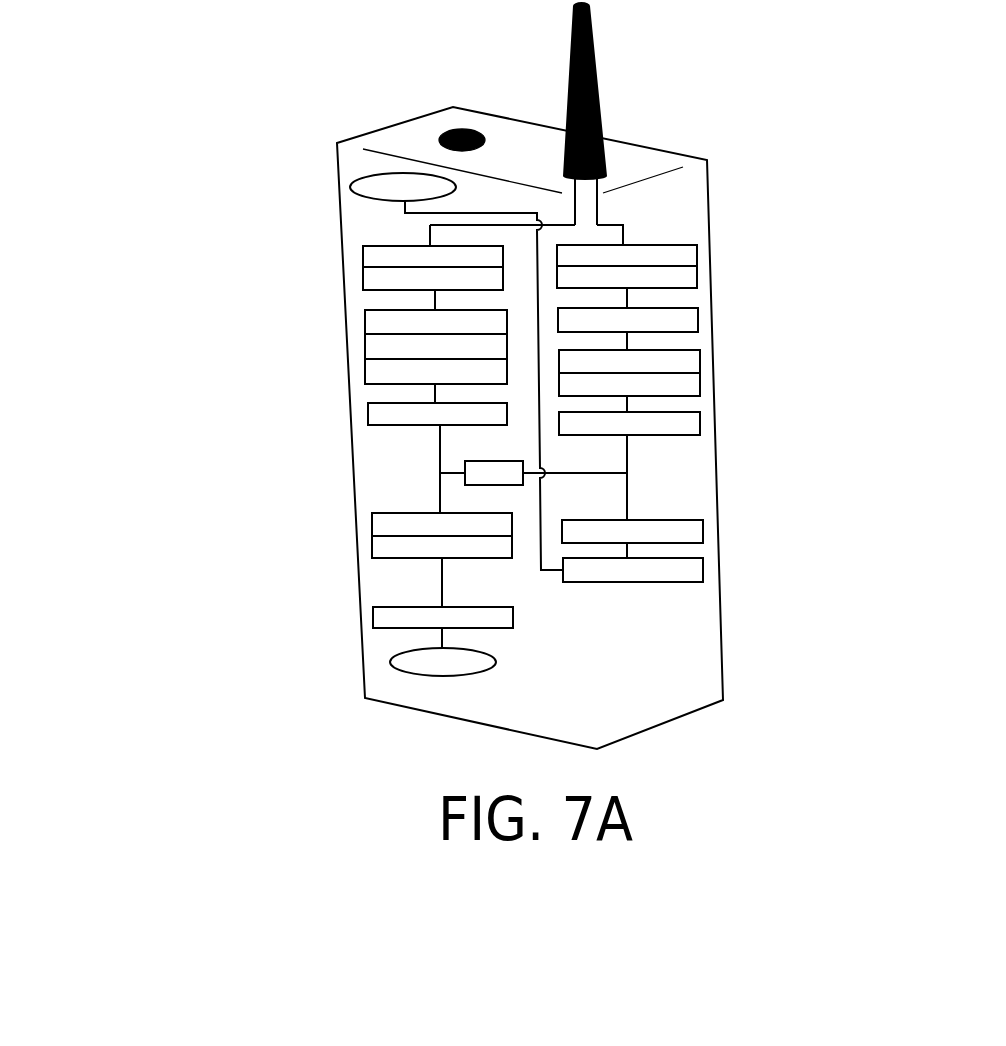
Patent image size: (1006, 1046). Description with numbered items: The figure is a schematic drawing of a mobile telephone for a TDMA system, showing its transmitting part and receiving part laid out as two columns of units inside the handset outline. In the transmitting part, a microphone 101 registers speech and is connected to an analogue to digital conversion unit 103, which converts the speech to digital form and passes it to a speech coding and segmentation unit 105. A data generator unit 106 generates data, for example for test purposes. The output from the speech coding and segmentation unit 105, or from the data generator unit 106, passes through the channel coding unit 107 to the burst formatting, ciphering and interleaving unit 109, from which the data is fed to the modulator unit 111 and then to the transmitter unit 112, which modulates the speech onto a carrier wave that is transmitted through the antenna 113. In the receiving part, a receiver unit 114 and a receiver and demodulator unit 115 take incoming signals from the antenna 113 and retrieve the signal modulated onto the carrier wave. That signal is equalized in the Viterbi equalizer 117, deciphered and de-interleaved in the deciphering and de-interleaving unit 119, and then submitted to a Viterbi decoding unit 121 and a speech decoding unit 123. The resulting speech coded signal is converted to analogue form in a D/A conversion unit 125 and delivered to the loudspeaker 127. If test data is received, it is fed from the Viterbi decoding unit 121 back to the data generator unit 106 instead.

The microphone 101 is at (478, 671).
The analogue to digital (A/D) conversion unit 103 is at (513, 615).
The speech coding and segmentation unit 105 is at (372, 537).
The data generator unit 106 is at (463, 477).
The channel coding unit 107 is at (368, 413).
The burst formatting, ciphering and interleaving unit 109 is at (366, 347).
The modulator unit 111 is at (365, 279).
The transmitter unit 112 is at (365, 255).
The antenna 113 is at (596, 67).
The receiver unit 114 is at (697, 255).
The receiver and demodulator unit 115 is at (697, 278).
The Viterbi equalizer 117 is at (698, 322).
The deciphering and de-interleaving unit 119 is at (700, 373).
The Viterbi decoding unit 121 is at (700, 423).
The speech decoding unit 123 is at (703, 527).
The D/A conversion unit 125 is at (703, 568).
The loudspeaker 127 is at (350, 188).